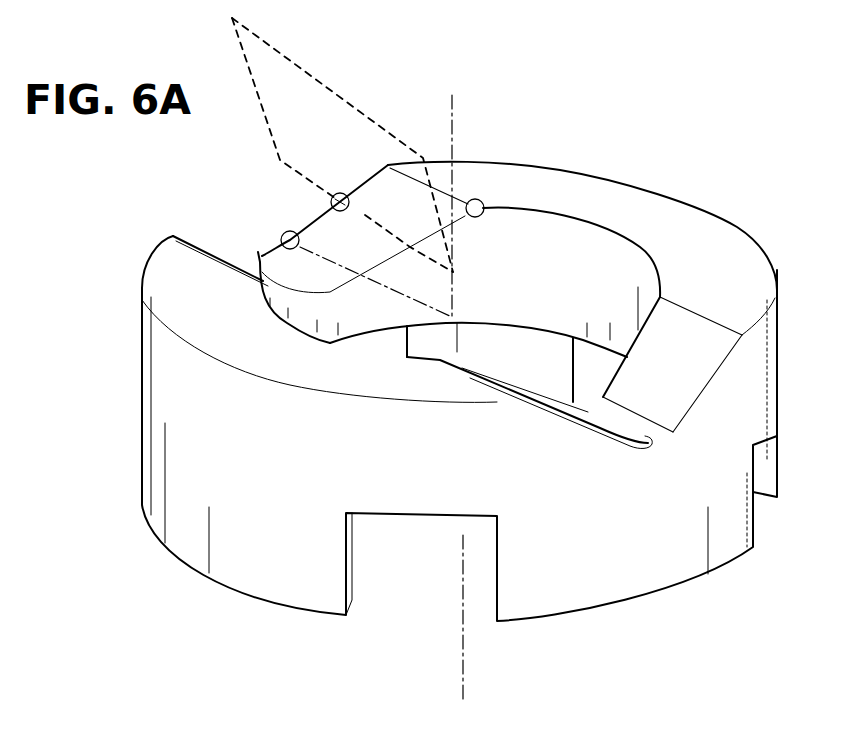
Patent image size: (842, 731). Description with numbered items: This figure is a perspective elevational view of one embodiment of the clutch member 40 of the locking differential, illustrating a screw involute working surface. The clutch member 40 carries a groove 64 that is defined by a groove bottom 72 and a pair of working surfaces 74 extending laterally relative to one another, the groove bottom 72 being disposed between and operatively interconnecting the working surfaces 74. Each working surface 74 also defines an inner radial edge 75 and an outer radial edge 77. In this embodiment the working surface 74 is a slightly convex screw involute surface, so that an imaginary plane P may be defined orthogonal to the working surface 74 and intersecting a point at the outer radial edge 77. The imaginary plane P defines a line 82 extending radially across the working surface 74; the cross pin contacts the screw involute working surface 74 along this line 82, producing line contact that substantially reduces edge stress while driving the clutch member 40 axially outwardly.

The clutch member 40 is at (683, 88).
The groove 64 is at (664, 318).
The groove bottom 72 is at (258, 253).
The working surface 74 is at (713, 350).
The inner radial edge 75 is at (465, 218).
The outer radial edge 77 is at (306, 232).
The line 82 is at (365, 215).
The imaginary plane P is at (305, 90).